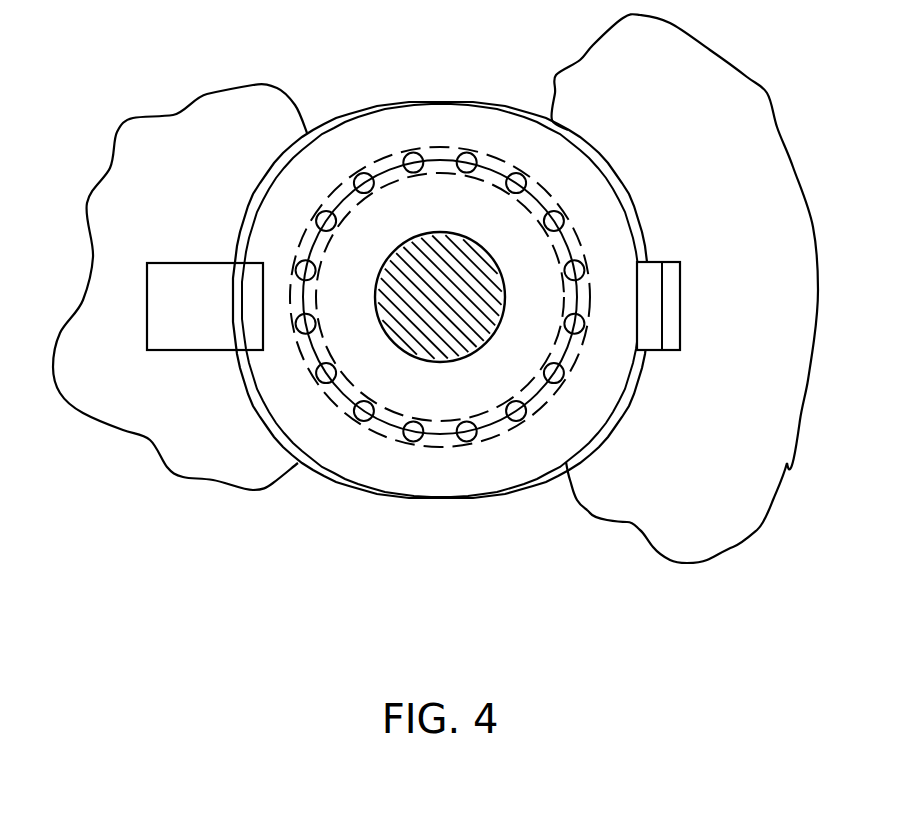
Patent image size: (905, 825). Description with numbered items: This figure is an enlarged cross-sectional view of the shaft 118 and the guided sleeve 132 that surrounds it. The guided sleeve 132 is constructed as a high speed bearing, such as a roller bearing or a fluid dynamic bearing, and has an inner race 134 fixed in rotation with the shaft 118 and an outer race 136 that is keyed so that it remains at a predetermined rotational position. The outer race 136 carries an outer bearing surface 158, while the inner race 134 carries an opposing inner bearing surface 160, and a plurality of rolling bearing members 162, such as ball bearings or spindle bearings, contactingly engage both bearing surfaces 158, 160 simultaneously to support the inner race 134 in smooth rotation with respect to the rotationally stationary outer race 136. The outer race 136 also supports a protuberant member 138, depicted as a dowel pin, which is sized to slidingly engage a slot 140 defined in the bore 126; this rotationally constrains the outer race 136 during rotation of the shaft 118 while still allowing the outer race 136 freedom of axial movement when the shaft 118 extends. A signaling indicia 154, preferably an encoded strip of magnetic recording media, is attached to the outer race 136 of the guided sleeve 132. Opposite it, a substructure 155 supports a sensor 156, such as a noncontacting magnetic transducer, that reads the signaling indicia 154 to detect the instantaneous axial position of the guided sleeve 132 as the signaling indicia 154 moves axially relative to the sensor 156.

The shaft 118 is at (441, 248).
The bore 126 is at (577, 143).
The guided sleeve 132 is at (506, 527).
The inner race 134 is at (510, 372).
The outer race 136 is at (385, 105).
The protuberant member 138 is at (653, 333).
The slot 140 is at (668, 264).
The signaling indicia 154 is at (255, 323).
The substructure 155 is at (207, 113).
The sensor 156 is at (207, 290).
The outer bearing surface 158 is at (432, 146).
The inner bearing surface 160 is at (437, 424).
The rolling bearing members 162 is at (322, 390).